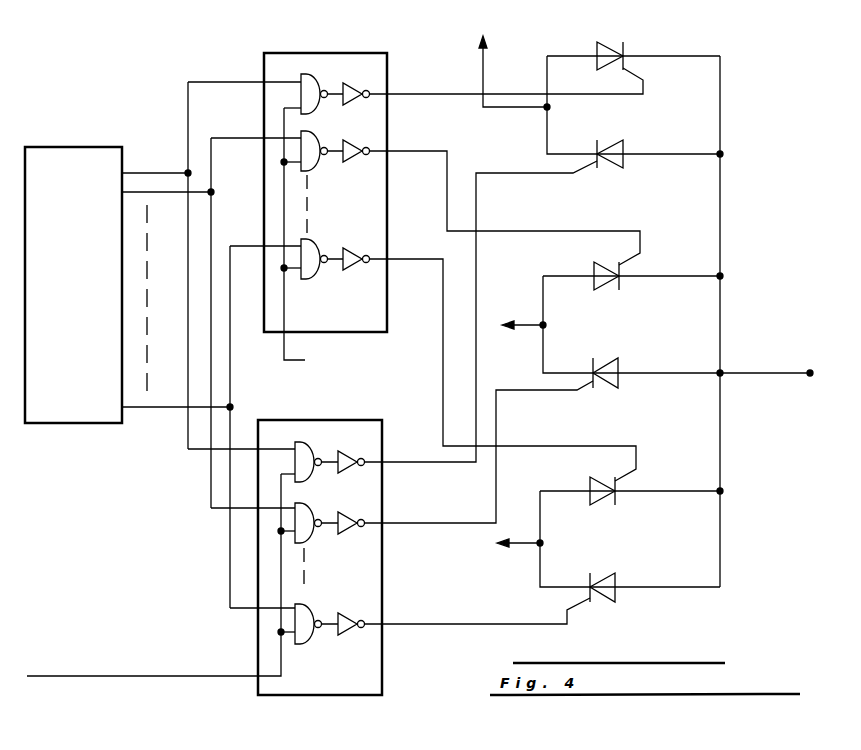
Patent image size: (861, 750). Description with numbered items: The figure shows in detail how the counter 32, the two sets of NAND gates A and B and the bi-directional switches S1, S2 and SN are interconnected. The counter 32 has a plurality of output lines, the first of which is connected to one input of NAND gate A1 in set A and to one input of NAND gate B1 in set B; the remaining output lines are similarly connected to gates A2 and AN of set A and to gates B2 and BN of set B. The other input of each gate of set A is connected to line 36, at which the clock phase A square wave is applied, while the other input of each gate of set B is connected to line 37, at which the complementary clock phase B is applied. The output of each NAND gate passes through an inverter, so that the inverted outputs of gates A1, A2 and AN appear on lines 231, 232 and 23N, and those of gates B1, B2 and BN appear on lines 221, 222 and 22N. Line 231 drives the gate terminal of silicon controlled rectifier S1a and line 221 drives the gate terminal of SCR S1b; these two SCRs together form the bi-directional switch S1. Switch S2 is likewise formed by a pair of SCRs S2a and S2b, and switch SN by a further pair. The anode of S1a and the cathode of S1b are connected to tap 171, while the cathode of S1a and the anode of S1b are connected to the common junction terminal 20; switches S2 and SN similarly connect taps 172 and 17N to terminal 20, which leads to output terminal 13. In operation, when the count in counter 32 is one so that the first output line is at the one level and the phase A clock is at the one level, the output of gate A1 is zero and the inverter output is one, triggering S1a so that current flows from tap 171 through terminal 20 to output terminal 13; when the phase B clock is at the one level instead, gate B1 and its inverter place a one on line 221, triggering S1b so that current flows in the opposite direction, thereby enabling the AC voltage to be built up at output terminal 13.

The counter 32 is at (82, 147).
The line 36 is at (296, 362).
The line 37 is at (128, 684).
The common junction terminal 20 is at (722, 372).
The output terminal 13 is at (810, 372).
The gating line 23-1 231 is at (450, 90).
The gating line 23-2 232 is at (408, 158).
The gating line 23-N 23N is at (403, 265).
The line 221 is at (388, 468).
The gating line 22-2 222 is at (388, 530).
The gating line 22-N 22N is at (392, 625).
The tap 171 is at (502, 64).
The output to load 17-2 172 is at (514, 336).
The output to load 17-N 17N is at (509, 554).
The set of gates A is at (338, 53).
The set of gates B is at (338, 420).
The NAND gate A1 is at (319, 86).
The NAND gate A2 is at (314, 168).
The NAND gate AN is at (310, 278).
The NAND gate B1 is at (305, 449).
The NAND gate B2 is at (305, 510).
The NAND gate BN is at (309, 612).
The bi-directional switch S1 is at (633, 108).
The switch S2 is at (631, 337).
The switch SN is at (630, 539).
The silicon controlled rectifier S1a is at (618, 48).
The silicon controlled rectifier S1b is at (615, 166).
The SCR S2a is at (600, 289).
The SCR S2b is at (606, 388).